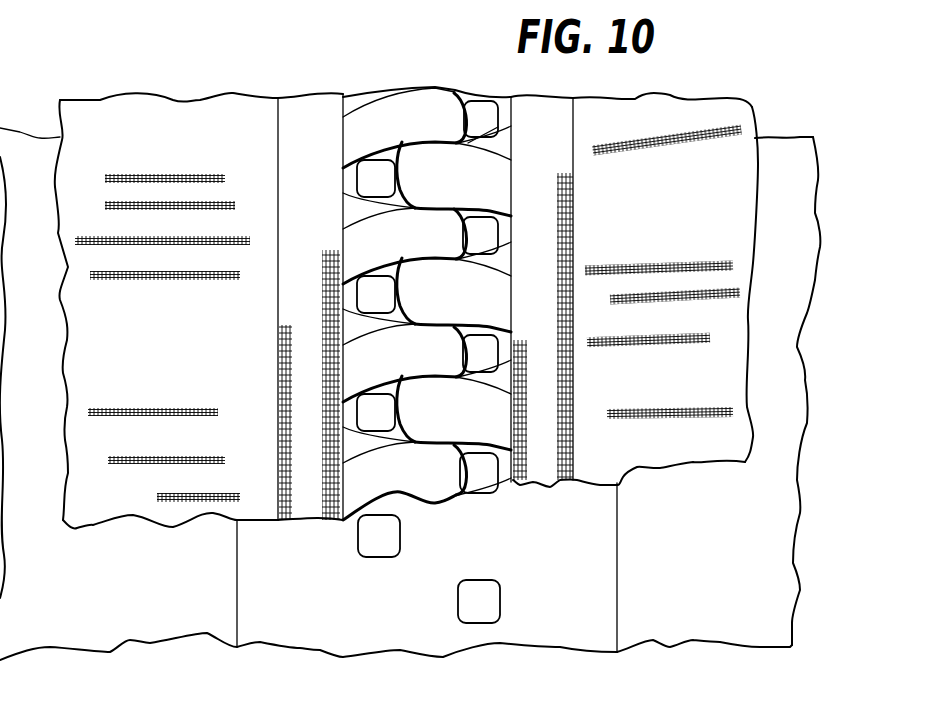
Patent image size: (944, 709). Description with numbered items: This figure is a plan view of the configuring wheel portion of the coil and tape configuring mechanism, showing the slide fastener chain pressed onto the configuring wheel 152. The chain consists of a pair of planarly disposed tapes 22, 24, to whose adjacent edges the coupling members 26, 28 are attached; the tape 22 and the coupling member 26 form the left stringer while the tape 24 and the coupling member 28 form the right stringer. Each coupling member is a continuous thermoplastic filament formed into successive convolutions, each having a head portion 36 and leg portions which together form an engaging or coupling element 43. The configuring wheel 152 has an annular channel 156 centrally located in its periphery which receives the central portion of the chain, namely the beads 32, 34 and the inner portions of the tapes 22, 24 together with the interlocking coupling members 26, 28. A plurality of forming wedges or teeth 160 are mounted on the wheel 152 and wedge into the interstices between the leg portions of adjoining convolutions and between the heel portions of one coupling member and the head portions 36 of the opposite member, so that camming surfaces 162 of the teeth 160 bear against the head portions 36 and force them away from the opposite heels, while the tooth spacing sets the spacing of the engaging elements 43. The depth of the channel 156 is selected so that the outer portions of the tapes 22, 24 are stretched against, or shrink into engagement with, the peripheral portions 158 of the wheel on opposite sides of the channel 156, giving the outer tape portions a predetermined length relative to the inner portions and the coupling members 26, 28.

The tape 22 is at (155, 115).
The tape 24 is at (685, 120).
The coupling member 26 is at (376, 92).
The coupling member 28 is at (467, 138).
The bead 32 is at (283, 330).
The bead 34 is at (578, 248).
The head portion 36 is at (448, 248).
The engaging or coupling element 43 is at (406, 502).
The configuring wheel 152 is at (160, 647).
The annular channel 156 is at (617, 552).
The peripheral portion 158 is at (695, 630).
The forming wedges or teeth 160 is at (370, 172).
The camming surfaces 162 is at (397, 177).